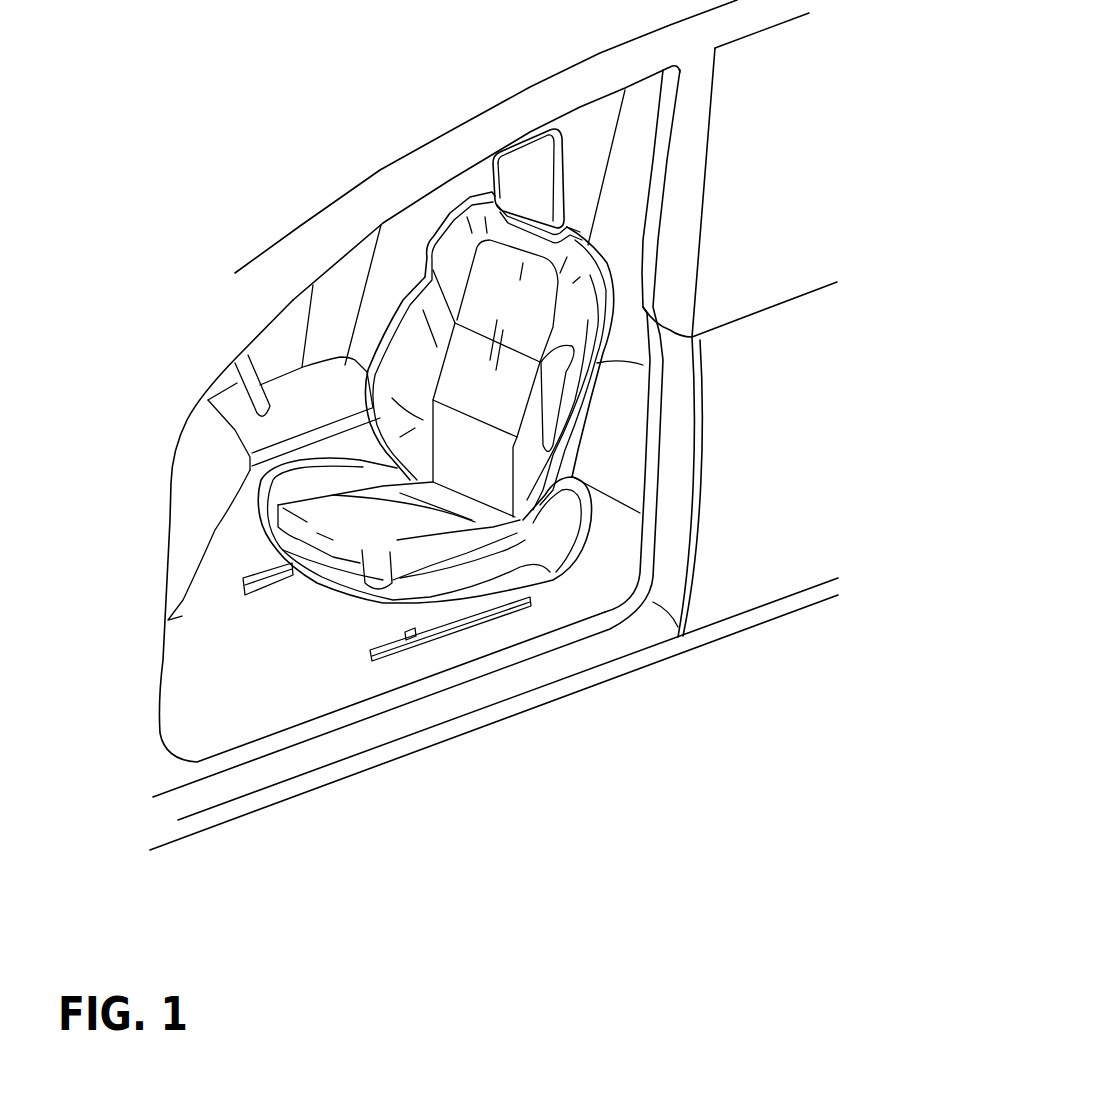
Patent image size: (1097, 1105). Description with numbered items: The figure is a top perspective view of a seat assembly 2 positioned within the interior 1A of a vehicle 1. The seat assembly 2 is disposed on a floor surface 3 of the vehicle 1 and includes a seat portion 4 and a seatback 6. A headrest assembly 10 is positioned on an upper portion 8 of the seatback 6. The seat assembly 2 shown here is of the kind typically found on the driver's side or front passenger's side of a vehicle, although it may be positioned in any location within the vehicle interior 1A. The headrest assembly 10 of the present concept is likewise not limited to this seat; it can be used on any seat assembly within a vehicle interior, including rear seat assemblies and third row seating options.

The vehicle 1 is at (530, 115).
The interior 1A is at (340, 307).
The seat assembly 2 is at (598, 463).
The floor surface 3 is at (220, 702).
The seat portion 4 is at (363, 518).
The seatback 6 is at (510, 367).
The upper portion 8 is at (578, 262).
The headrest assembly 10 is at (578, 185).